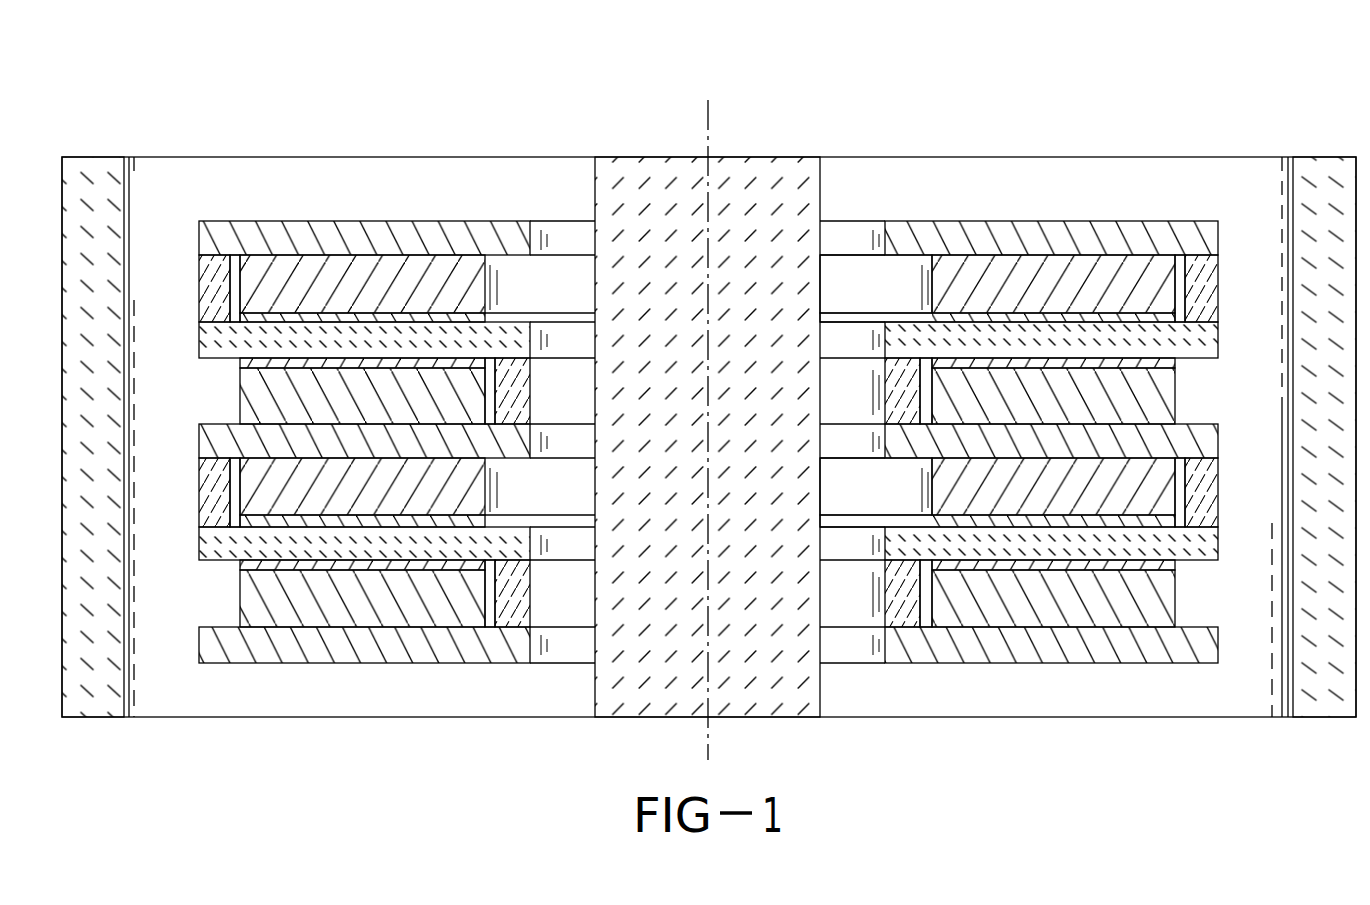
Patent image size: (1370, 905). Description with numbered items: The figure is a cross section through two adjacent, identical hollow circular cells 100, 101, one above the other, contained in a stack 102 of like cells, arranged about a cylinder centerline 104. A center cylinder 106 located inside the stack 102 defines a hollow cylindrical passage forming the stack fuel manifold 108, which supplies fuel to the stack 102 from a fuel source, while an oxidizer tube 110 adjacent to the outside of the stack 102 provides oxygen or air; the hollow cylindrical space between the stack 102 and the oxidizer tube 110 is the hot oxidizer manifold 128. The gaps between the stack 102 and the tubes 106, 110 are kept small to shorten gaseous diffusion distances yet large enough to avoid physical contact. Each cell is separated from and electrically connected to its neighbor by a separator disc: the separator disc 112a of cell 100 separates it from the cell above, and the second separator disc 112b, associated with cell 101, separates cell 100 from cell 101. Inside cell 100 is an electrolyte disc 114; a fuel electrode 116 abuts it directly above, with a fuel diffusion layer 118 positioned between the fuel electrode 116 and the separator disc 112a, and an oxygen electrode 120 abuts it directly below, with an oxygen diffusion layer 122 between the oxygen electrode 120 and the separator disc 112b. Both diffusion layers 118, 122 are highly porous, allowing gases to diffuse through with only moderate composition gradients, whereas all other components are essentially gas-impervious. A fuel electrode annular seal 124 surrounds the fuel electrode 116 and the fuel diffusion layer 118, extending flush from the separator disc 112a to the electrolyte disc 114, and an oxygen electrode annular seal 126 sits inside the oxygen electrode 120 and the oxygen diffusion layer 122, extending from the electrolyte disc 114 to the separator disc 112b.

The cell 100 is at (357, 433).
The adjacent cell 101 is at (340, 670).
The stack 102 is at (504, 128).
The cylinder centerline 104 is at (709, 126).
The center cylinder 106 is at (674, 192).
The stack fuel manifold 108 is at (564, 660).
The oxidizer tube 110 is at (93, 174).
The separator disc 112a is at (385, 234).
The second separator disc 112b is at (212, 440).
The electrolyte disc 114 is at (210, 345).
The fuel electrode 116 is at (428, 320).
The fuel diffusion layer 118 is at (295, 287).
The oxygen electrode 120 is at (300, 362).
The oxygen diffusion layer 122 is at (467, 395).
The fuel electrode annular seal 124 is at (213, 283).
The oxygen electrode annular seal 126 is at (517, 392).
The hot oxidizer manifold 128 is at (168, 662).